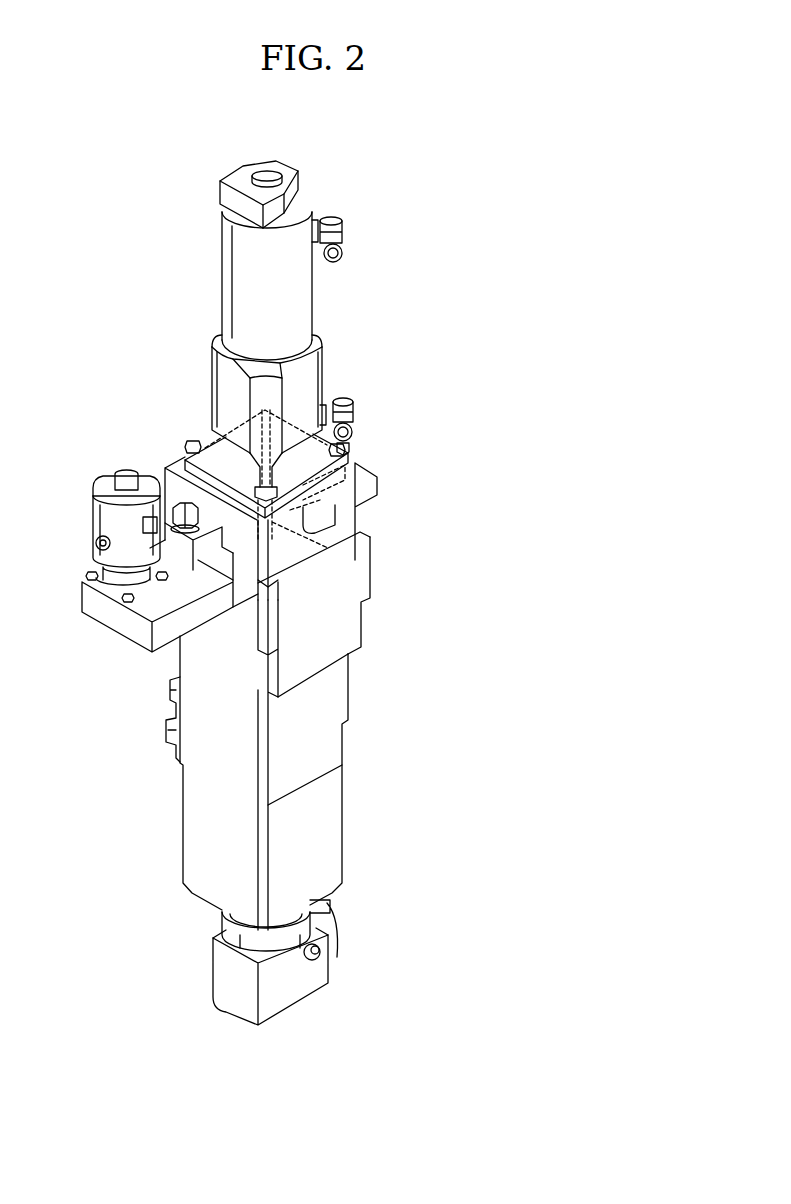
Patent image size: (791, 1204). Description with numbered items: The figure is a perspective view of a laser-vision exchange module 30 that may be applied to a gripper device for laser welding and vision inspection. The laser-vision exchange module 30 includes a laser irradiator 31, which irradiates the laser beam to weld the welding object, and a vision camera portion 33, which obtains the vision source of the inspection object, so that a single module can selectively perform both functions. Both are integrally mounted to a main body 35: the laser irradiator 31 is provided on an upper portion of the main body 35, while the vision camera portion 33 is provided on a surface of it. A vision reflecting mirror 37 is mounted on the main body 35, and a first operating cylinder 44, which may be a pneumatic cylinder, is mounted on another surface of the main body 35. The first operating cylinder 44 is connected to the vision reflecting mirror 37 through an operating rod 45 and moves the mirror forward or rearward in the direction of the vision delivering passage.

The laser-vision exchange module 30 is at (248, 128).
The laser irradiator 31 is at (290, 296).
The vision camera portion 33 is at (107, 517).
The main body 35 is at (210, 670).
The vision reflecting mirror 37 is at (372, 534).
The first operating cylinder 44 is at (362, 478).
The operating rod 45 is at (357, 515).